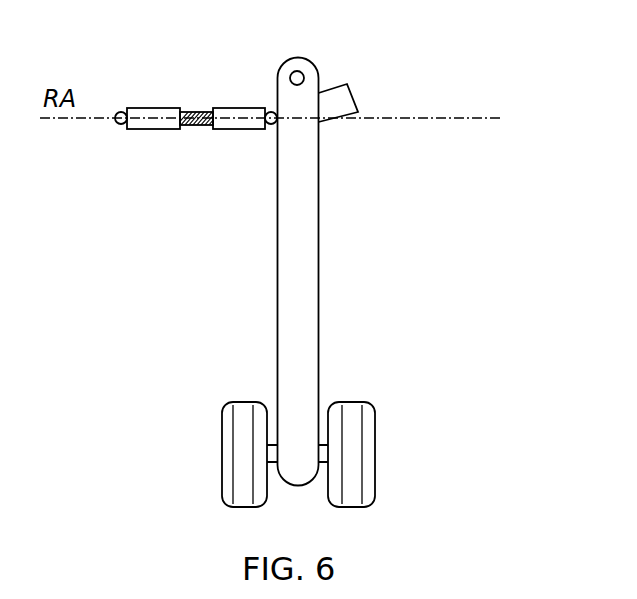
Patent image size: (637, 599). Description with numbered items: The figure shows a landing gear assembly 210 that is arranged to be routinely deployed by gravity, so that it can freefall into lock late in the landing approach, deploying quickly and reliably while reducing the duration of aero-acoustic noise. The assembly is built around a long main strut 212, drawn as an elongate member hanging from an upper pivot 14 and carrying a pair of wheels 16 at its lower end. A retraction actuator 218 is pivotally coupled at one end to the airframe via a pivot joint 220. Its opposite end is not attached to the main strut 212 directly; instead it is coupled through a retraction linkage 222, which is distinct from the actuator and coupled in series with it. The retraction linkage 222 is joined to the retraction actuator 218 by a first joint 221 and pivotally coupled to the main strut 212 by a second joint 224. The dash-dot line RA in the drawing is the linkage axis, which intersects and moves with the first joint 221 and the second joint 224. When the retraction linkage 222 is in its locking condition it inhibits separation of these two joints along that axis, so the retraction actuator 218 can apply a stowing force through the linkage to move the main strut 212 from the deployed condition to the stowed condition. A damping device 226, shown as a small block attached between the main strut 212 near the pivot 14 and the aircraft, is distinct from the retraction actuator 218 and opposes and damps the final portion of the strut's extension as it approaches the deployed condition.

The pivot 14 is at (301, 71).
The wheels 16 is at (376, 446).
The landing gear assembly 210 is at (441, 60).
The main strut 212 is at (319, 200).
The retraction actuator 218 is at (214, 99).
The pivot joint 220 is at (118, 123).
The first joint 221 is at (200, 126).
The retraction linkage 222 is at (231, 130).
The second joint 224 is at (267, 112).
The damping device 226 is at (355, 96).